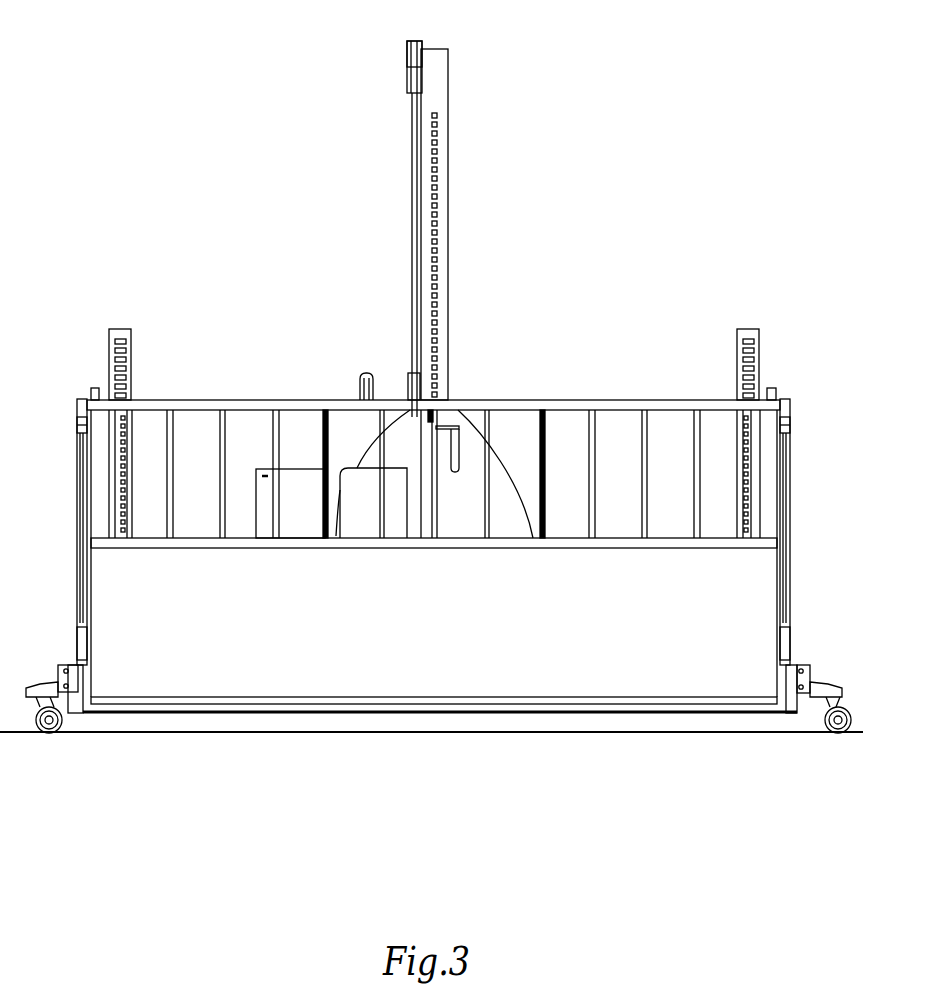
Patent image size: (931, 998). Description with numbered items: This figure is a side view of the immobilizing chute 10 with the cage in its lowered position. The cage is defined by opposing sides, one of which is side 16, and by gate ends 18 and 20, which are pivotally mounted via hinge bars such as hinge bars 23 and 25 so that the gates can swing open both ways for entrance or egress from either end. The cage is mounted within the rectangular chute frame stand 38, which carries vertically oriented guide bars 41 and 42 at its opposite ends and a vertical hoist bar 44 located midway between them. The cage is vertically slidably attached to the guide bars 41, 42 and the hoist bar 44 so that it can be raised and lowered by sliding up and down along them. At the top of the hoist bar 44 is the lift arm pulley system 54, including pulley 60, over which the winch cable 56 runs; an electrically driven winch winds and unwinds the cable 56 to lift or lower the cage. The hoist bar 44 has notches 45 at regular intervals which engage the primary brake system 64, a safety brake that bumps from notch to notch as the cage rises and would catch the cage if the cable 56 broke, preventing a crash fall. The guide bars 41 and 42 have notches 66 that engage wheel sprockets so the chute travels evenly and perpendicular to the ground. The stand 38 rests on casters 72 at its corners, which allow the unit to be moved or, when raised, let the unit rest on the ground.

The immobilizing chute 10 is at (596, 122).
The side 16 is at (302, 400).
The gate end 18 is at (786, 400).
The gate end 20 is at (86, 400).
The hinge bar 23 is at (80, 478).
The hinge bar 25 is at (781, 478).
The chute frame stand 38 is at (290, 706).
The vertical guide bar 41 is at (124, 333).
The vertical guide bar 42 is at (757, 333).
The vertical hoist bar 44 is at (448, 140).
The notches 45 is at (437, 165).
The lift arm pulley system 54 is at (407, 80).
The winch cable 56 is at (412, 216).
The pulley 60 is at (408, 42).
The primary brake system 64 is at (458, 440).
The notches 66 is at (116, 365).
The caster 72 is at (58, 730).